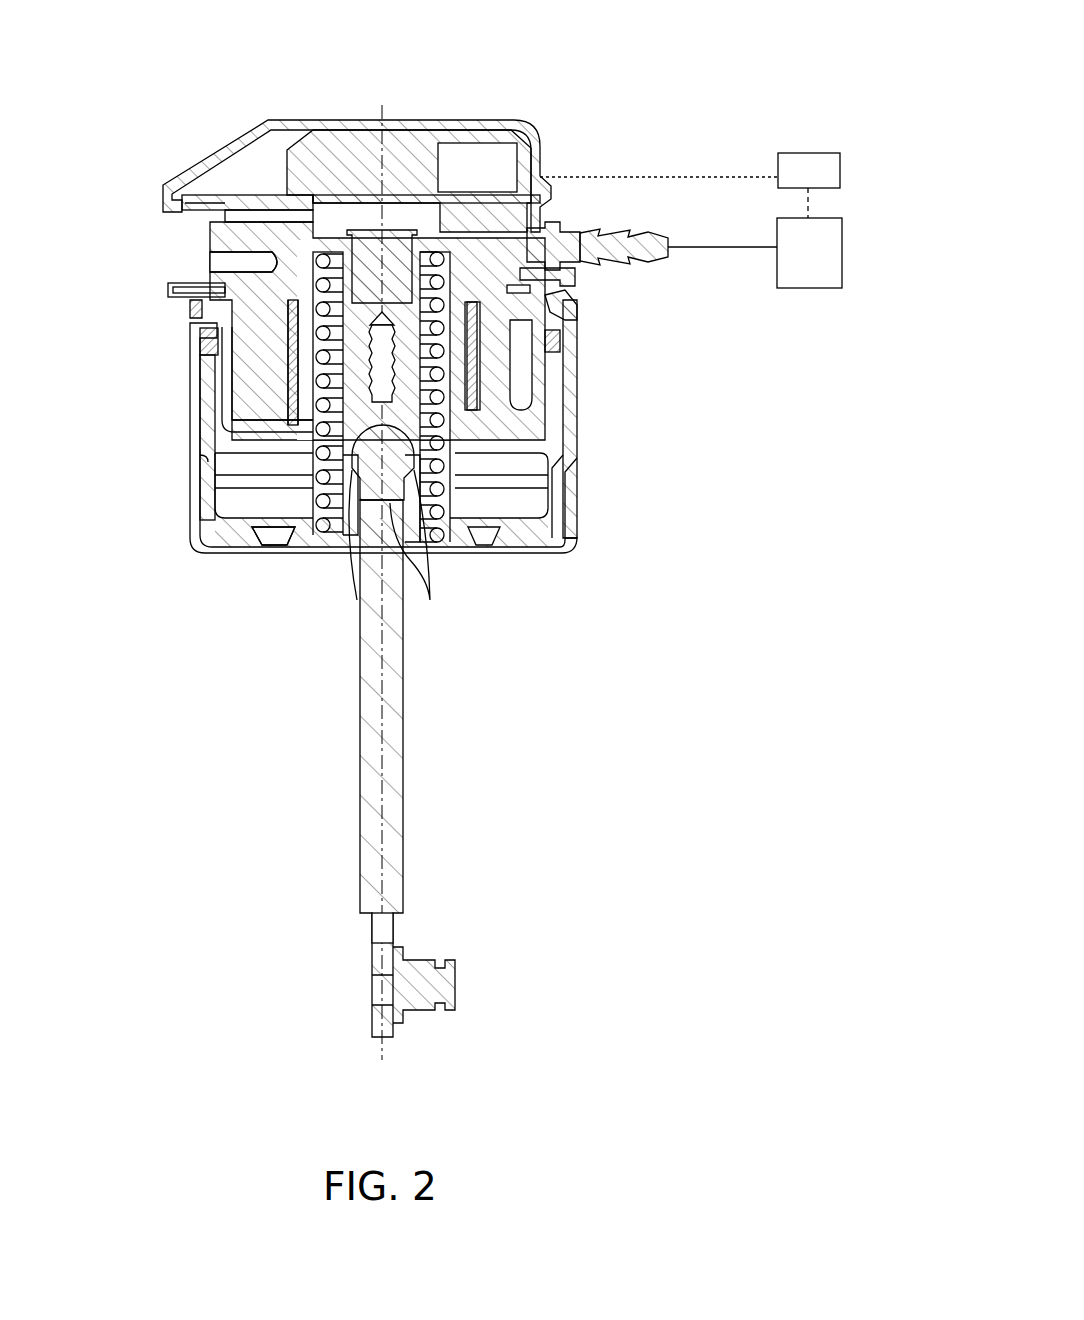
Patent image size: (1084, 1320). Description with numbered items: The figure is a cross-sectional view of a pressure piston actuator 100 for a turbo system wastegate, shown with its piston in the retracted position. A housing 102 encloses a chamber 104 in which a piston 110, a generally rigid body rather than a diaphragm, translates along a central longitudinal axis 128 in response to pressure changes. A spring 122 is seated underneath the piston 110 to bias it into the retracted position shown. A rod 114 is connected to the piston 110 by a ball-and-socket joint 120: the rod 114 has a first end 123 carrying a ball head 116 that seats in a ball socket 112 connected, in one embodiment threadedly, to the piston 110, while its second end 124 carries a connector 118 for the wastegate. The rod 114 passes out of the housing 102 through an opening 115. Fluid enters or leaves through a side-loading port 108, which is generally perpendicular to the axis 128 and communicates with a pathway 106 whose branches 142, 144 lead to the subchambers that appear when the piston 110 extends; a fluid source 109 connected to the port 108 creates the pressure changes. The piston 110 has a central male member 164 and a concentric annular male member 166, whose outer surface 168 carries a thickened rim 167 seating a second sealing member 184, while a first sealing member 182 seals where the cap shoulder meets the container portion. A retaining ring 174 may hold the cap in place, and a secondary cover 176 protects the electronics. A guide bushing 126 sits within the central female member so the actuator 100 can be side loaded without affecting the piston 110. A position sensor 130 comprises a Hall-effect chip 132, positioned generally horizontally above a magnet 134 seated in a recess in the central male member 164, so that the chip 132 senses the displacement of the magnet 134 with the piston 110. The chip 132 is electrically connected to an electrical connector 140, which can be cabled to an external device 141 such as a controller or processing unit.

The pressure piston actuator 100 is at (519, 82).
The housing 102 is at (610, 428).
The chamber 104 is at (210, 456).
The pathway 106 is at (500, 400).
The port 108 is at (648, 233).
The fluid source 109 is at (795, 290).
The piston 110 is at (526, 440).
The ball socket 112 is at (345, 457).
The rod 114 is at (398, 808).
The opening 115 is at (357, 525).
The ball head 116 is at (332, 482).
The connector 118 is at (452, 992).
The ball-and-socket joint 120 is at (441, 440).
The spring 122 is at (445, 492).
The first end 123 is at (424, 532).
The second end 124 is at (372, 950).
The guide bushing 126 is at (265, 285).
The central longitudinal axis 128 is at (385, 890).
The position sensor 130 is at (244, 196).
The chip/Hall-effect position sensor 132 is at (265, 200).
The magnet 134 is at (396, 252).
The electrical connector 140 is at (500, 166).
The external device 141 is at (790, 150).
The branch 142 is at (497, 245).
The branch 144 is at (520, 334).
The central male member 164 is at (280, 282).
The annular male member 166 is at (225, 409).
The thickened rim 167 is at (283, 324).
The outer surface 168 is at (222, 376).
The retaining ring 174 is at (578, 280).
The secondary cover 176 is at (274, 142).
The first sealing member 182 is at (575, 302).
The second sealing member 184 is at (212, 345).